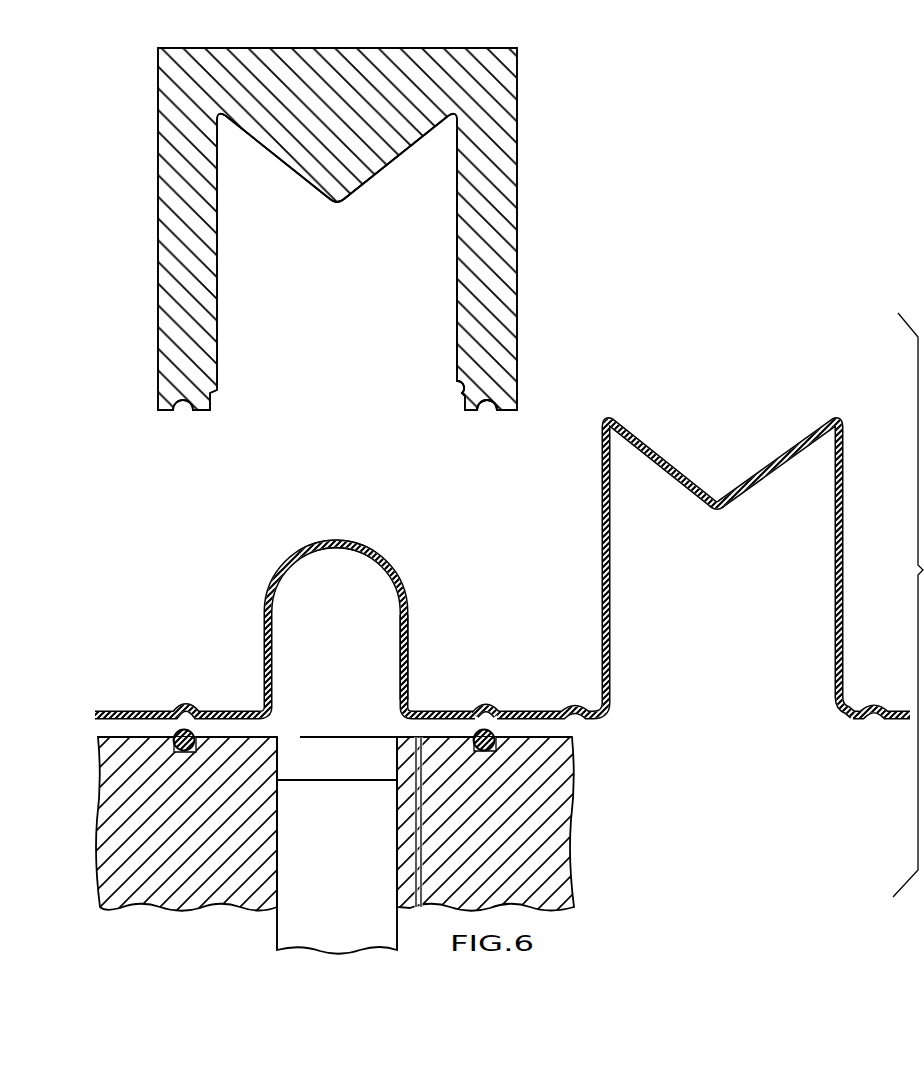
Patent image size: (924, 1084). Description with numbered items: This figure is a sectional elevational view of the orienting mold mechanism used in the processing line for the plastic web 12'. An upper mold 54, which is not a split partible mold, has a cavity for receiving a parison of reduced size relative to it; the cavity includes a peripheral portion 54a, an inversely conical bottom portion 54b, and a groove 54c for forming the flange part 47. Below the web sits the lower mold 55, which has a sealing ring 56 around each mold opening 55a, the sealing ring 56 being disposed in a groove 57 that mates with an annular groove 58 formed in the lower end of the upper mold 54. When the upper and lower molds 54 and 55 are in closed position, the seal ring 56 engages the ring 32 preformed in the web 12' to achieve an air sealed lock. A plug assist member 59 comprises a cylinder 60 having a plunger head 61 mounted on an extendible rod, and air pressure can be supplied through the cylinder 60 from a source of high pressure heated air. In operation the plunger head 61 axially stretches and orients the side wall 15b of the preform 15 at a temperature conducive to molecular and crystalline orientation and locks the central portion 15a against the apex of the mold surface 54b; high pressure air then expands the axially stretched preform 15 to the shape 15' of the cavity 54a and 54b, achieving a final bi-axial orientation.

The upper mold 54 is at (521, 217).
The peripheral portion 54a is at (455, 265).
The inversely conical bottom portion 54b is at (293, 162).
The groove 54c is at (468, 387).
The annular groove 58 is at (485, 410).
The plastic web 12' is at (506, 688).
The preform 15 is at (372, 629).
The central portion 15a is at (338, 542).
The side wall 15b is at (408, 661).
The expanded shape 15' is at (744, 568).
The ring 32 is at (488, 705).
The flange part 47 is at (857, 706).
The lower mold 55 is at (582, 828).
The mold opening 55a is at (372, 750).
The sealing ring 56 is at (497, 746).
The groove 57 is at (455, 746).
The plug assist member 59 is at (278, 920).
The cylinder 60 is at (350, 871).
The plunger head 61 is at (350, 773).